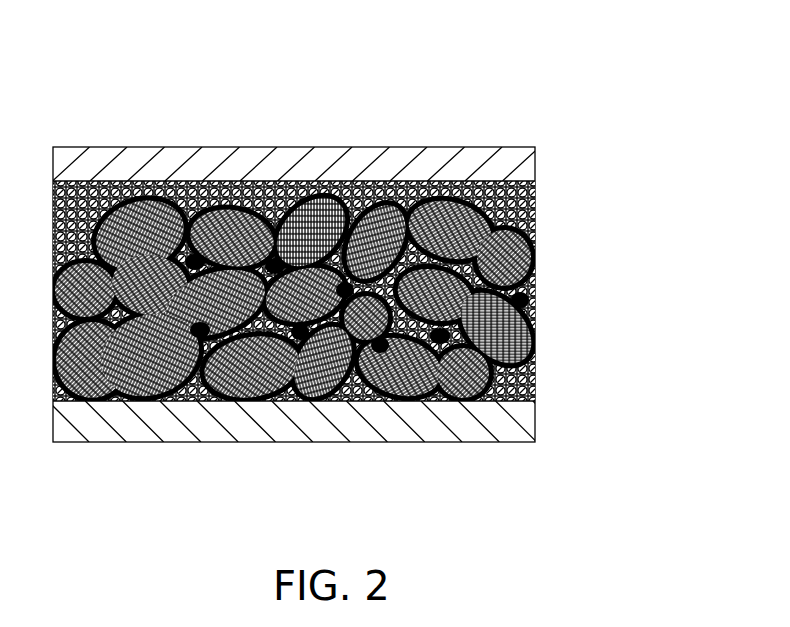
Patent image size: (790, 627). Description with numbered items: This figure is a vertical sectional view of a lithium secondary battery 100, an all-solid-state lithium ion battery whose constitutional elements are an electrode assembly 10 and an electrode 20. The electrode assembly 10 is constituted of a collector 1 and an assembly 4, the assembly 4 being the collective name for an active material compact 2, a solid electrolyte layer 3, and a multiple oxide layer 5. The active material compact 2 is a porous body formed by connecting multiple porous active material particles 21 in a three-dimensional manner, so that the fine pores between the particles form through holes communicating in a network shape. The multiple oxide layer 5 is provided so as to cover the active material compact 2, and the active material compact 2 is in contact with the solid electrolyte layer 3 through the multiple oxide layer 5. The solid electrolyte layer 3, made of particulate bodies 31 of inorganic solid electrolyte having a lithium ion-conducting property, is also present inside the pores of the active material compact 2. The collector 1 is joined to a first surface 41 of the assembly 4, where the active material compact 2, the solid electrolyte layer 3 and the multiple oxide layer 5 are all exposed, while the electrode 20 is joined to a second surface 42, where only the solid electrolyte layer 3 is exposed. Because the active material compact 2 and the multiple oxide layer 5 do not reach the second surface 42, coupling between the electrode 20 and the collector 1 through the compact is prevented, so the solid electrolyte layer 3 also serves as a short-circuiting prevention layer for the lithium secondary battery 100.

The lithium secondary battery 100 is at (458, 99).
The electrode 20 is at (535, 162).
The electrode assembly 10 is at (668, 263).
The collector 1 is at (535, 418).
The assembly 4 is at (638, 207).
The solid electrolyte layer 3 is at (341, 291).
The particulate bodies 31 is at (535, 220).
The active material compact 2 is at (341, 297).
The active material particle 21 is at (535, 340).
The multiple oxide layer 5 is at (530, 320).
The second surface 42 is at (330, 181).
The first surface 41 is at (360, 402).